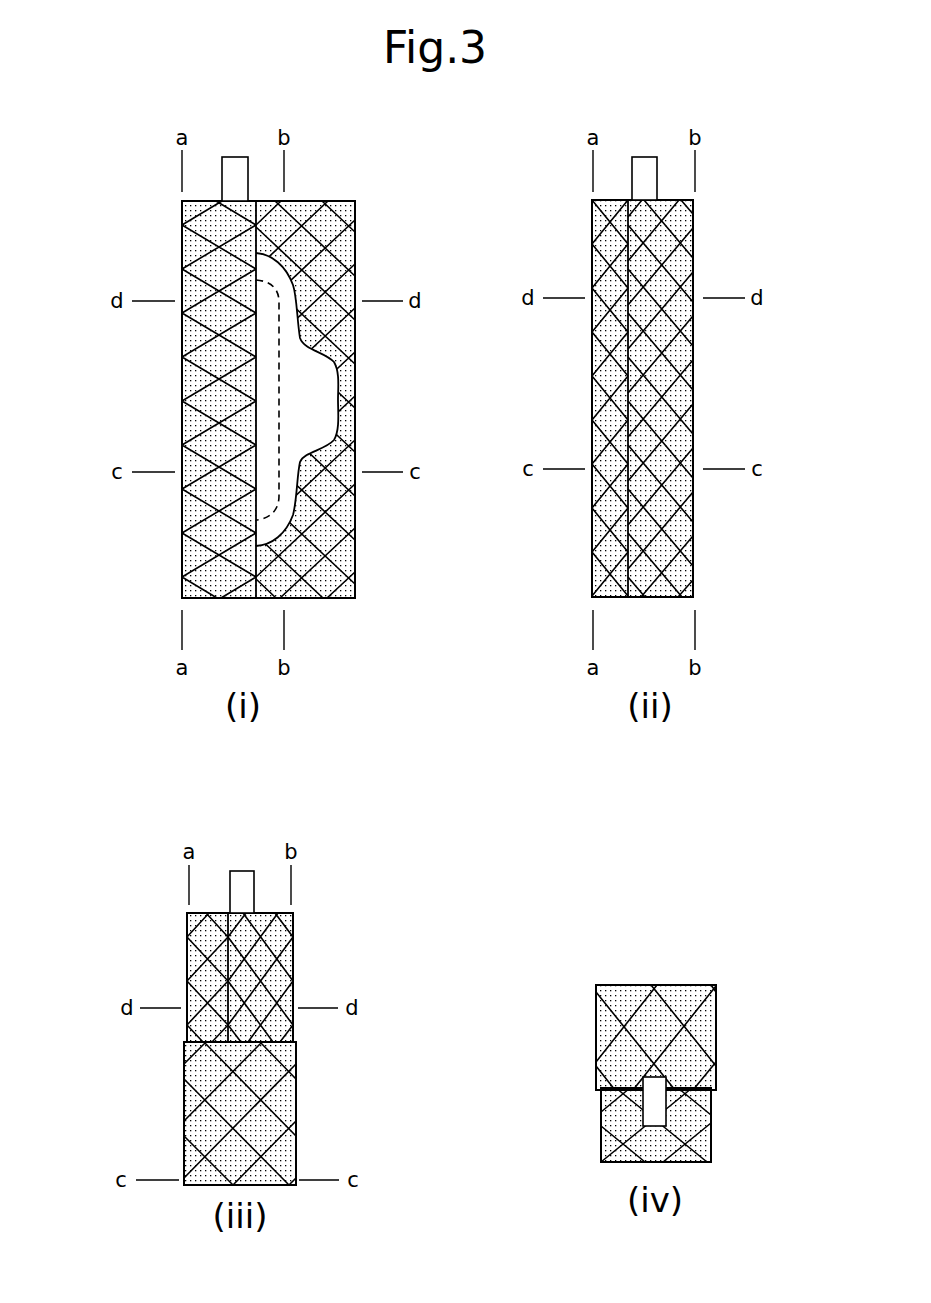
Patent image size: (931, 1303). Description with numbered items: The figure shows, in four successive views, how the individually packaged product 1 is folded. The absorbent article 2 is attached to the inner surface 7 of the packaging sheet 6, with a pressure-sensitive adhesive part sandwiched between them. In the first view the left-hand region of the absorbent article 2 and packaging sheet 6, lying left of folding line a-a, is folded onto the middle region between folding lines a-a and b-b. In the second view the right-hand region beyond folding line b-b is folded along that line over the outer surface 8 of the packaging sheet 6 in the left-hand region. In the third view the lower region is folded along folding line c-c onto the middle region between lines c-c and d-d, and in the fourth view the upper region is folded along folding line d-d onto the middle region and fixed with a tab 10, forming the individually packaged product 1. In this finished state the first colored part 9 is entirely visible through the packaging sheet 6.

The individually packaged product 1 is at (140, 195).
The absorbent article 2 is at (312, 392).
The packaging sheet 6 is at (343, 220).
The inner surface 7 is at (326, 575).
The outer surface 8 is at (203, 574).
The first colored part 9 is at (187, 392).
The tab 10 is at (233, 163).